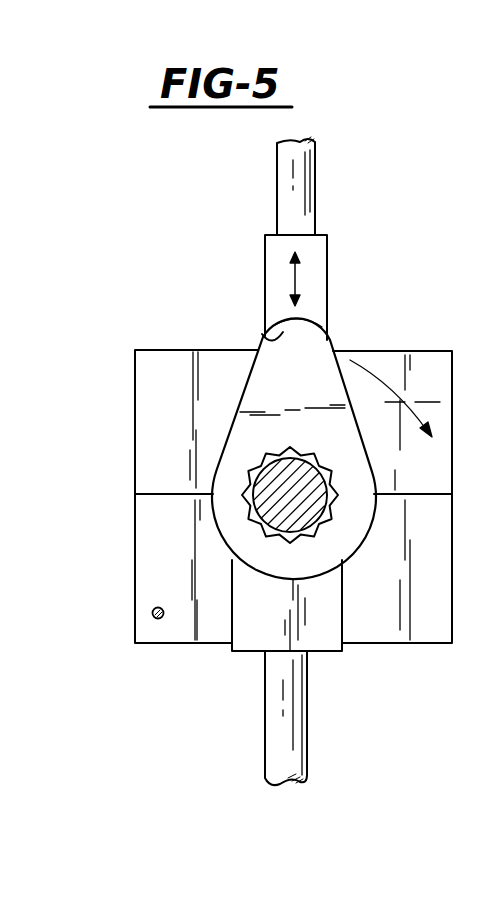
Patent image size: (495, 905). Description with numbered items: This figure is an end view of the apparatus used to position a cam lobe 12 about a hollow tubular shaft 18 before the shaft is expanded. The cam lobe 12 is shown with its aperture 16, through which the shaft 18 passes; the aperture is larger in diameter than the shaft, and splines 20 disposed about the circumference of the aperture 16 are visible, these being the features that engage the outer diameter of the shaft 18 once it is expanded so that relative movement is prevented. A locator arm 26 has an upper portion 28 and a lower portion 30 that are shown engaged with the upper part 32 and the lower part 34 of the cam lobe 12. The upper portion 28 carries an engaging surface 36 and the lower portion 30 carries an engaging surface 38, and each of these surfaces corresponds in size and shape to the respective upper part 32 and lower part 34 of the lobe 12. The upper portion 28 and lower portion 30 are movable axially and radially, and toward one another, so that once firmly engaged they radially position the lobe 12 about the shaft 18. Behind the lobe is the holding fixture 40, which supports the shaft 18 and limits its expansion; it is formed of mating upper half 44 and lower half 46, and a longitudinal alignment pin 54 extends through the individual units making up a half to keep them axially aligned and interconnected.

The cam lobe 12 is at (318, 362).
The aperture 16 is at (255, 467).
The hollow tubular shaft 18 is at (318, 499).
The splines 20 is at (337, 463).
The locator arm 26 is at (312, 177).
The upper portion 28 is at (326, 258).
The lower portion 30 is at (325, 643).
The upper part 32 is at (262, 337).
The lower part 34 is at (285, 575).
The engaging surface 36 is at (305, 318).
The engaging surface 38 is at (322, 578).
The holding fixture 40 is at (116, 614).
The upper half 44 is at (133, 453).
The lower half 46 is at (133, 543).
The longitudinal alignment pin 54 is at (163, 617).